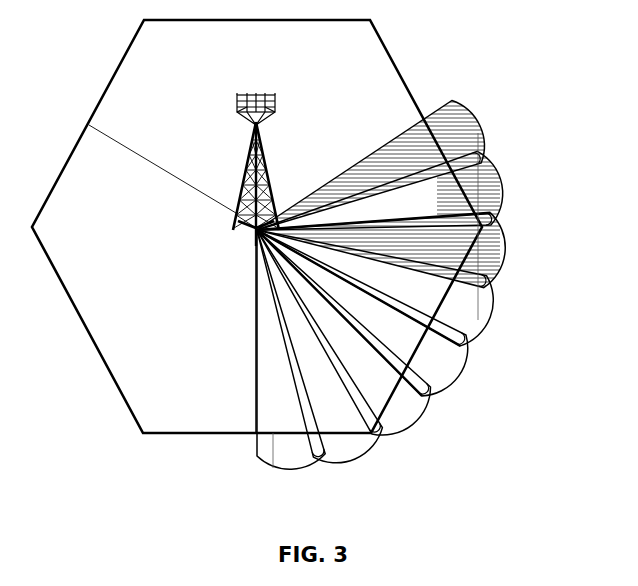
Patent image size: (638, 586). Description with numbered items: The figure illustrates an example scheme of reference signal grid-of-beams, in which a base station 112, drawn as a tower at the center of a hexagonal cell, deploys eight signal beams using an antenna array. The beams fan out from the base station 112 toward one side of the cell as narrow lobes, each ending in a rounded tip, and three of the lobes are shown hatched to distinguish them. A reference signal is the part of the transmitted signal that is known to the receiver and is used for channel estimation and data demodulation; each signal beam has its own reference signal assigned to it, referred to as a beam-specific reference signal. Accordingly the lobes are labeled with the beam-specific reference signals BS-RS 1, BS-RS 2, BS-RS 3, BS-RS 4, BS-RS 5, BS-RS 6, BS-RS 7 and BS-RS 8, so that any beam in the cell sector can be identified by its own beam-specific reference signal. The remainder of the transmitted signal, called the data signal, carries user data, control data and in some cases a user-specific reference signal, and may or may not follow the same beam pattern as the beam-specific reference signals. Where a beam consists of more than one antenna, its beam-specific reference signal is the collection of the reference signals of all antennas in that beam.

The base station 112 is at (238, 236).
The first beam-specific reference signal 1 is at (285, 369).
The second beam-specific reference signal 2 is at (338, 357).
The third beam-specific reference signal 3 is at (374, 340).
The fourth beam-specific reference signal 4 is at (398, 314).
The fifth beam-specific reference signal 5 is at (414, 288).
The sixth beam-specific reference signal 6 is at (424, 250).
The seventh beam-specific reference signal 7 is at (421, 190).
The eighth beam-specific reference signal 8 is at (414, 166).